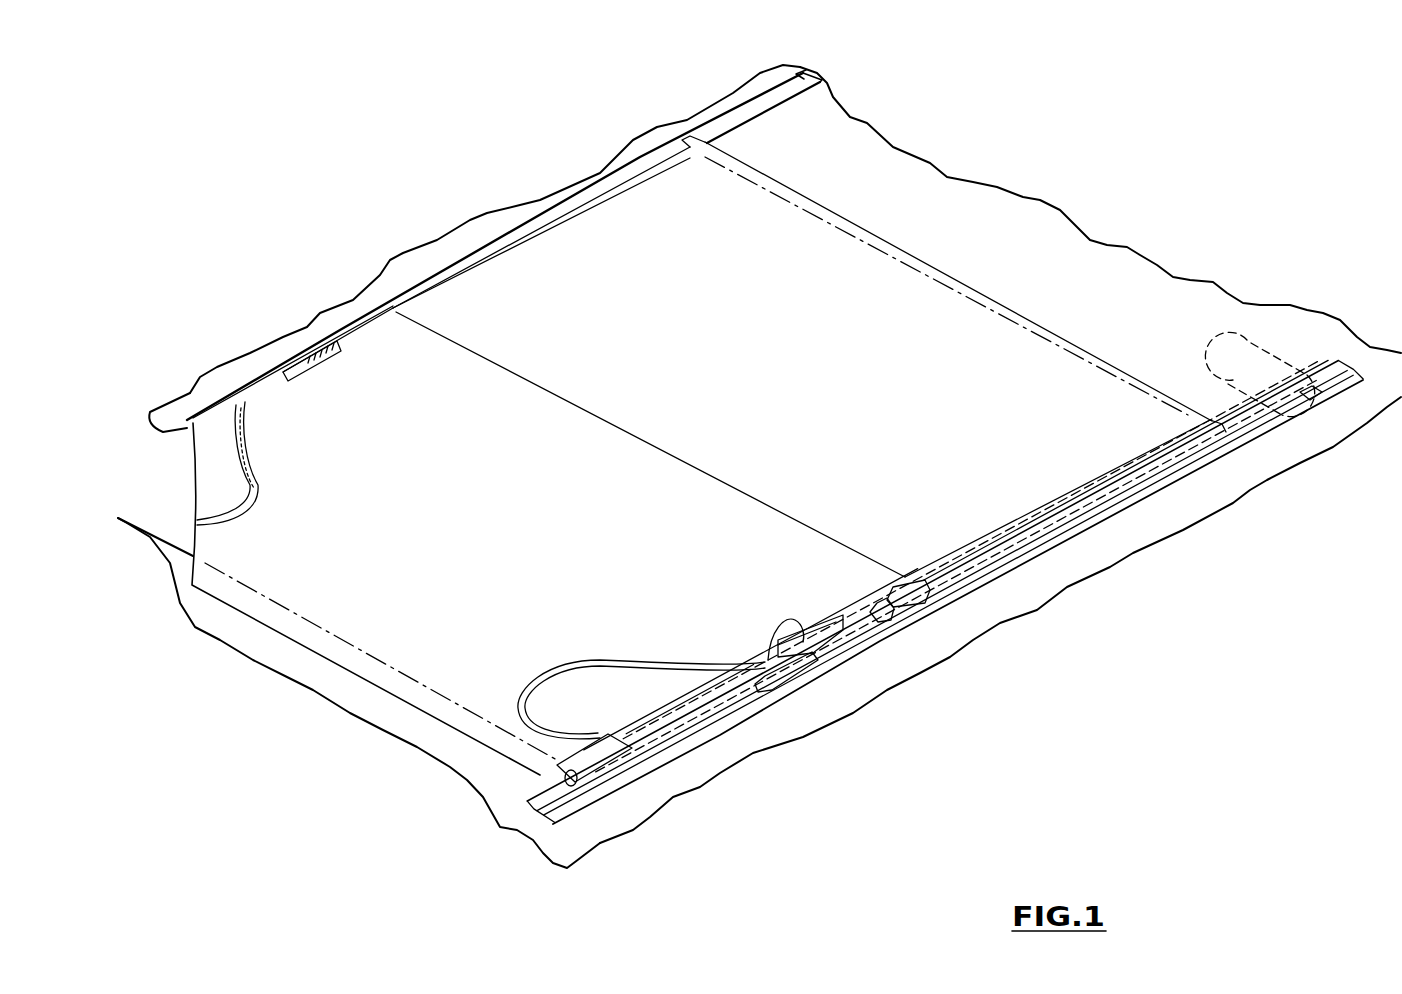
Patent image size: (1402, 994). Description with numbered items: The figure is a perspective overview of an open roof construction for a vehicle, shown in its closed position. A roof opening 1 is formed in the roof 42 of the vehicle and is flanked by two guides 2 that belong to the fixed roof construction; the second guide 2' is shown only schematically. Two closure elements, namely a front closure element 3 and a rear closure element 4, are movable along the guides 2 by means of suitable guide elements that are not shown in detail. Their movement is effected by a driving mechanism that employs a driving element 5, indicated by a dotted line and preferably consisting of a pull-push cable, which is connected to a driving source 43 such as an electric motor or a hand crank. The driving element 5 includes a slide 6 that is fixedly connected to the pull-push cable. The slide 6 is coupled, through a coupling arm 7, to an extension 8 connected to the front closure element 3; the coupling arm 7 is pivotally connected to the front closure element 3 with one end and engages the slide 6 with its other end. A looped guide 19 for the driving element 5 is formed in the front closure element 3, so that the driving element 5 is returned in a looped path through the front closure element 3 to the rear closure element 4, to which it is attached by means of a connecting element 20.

The roof opening 1 is at (900, 268).
The guide 2 is at (942, 583).
The guide 2' is at (504, 233).
The front closure element 3 is at (362, 362).
The rear closure element 4 is at (543, 283).
The driving element 5 is at (878, 624).
The slide 6 is at (786, 672).
The coupling arm 7 is at (832, 648).
The extension 8 is at (768, 668).
The looped guide 19 is at (530, 724).
The connecting element 20 is at (910, 604).
The roof 42 is at (1132, 287).
The driving source 43 is at (1258, 358).